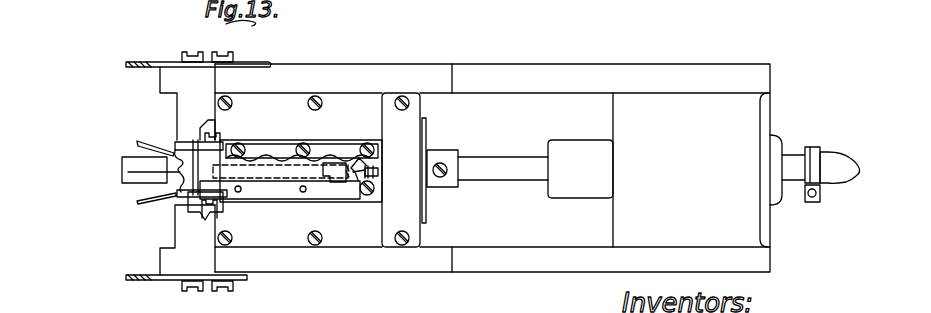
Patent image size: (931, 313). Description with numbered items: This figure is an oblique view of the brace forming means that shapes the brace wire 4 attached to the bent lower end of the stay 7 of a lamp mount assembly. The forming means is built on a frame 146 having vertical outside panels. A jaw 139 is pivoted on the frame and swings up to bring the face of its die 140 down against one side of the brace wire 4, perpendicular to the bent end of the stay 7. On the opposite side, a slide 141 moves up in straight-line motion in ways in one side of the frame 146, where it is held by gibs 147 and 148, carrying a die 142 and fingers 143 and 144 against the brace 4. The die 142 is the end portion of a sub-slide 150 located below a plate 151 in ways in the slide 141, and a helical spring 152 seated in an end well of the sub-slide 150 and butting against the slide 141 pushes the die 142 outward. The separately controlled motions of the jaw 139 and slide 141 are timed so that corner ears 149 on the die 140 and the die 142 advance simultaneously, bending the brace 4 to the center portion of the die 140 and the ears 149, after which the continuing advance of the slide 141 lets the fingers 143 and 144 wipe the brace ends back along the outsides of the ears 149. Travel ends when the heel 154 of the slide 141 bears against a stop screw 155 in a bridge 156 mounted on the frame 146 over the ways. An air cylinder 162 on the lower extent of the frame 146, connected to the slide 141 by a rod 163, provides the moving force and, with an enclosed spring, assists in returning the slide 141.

The brace wire 4 is at (138, 142).
The stay 7 is at (137, 157).
The jaw 139 is at (122, 176).
The die 140 is at (139, 199).
The slide 141 is at (198, 231).
The die 142 is at (190, 205).
The finger 143 is at (203, 215).
The finger 144 is at (188, 139).
The frame 146 is at (433, 273).
The gib 147 is at (289, 255).
The gib 148 is at (293, 98).
The corner ears 149 is at (176, 150).
The sub-slide 150 is at (278, 185).
The plate 151 is at (279, 148).
The helical spring 152 is at (359, 181).
The heel 154 is at (443, 150).
The stop screw 155 is at (360, 161).
The bridge 156 is at (378, 250).
The air cylinder 162 is at (612, 226).
The rod 163 is at (497, 161).